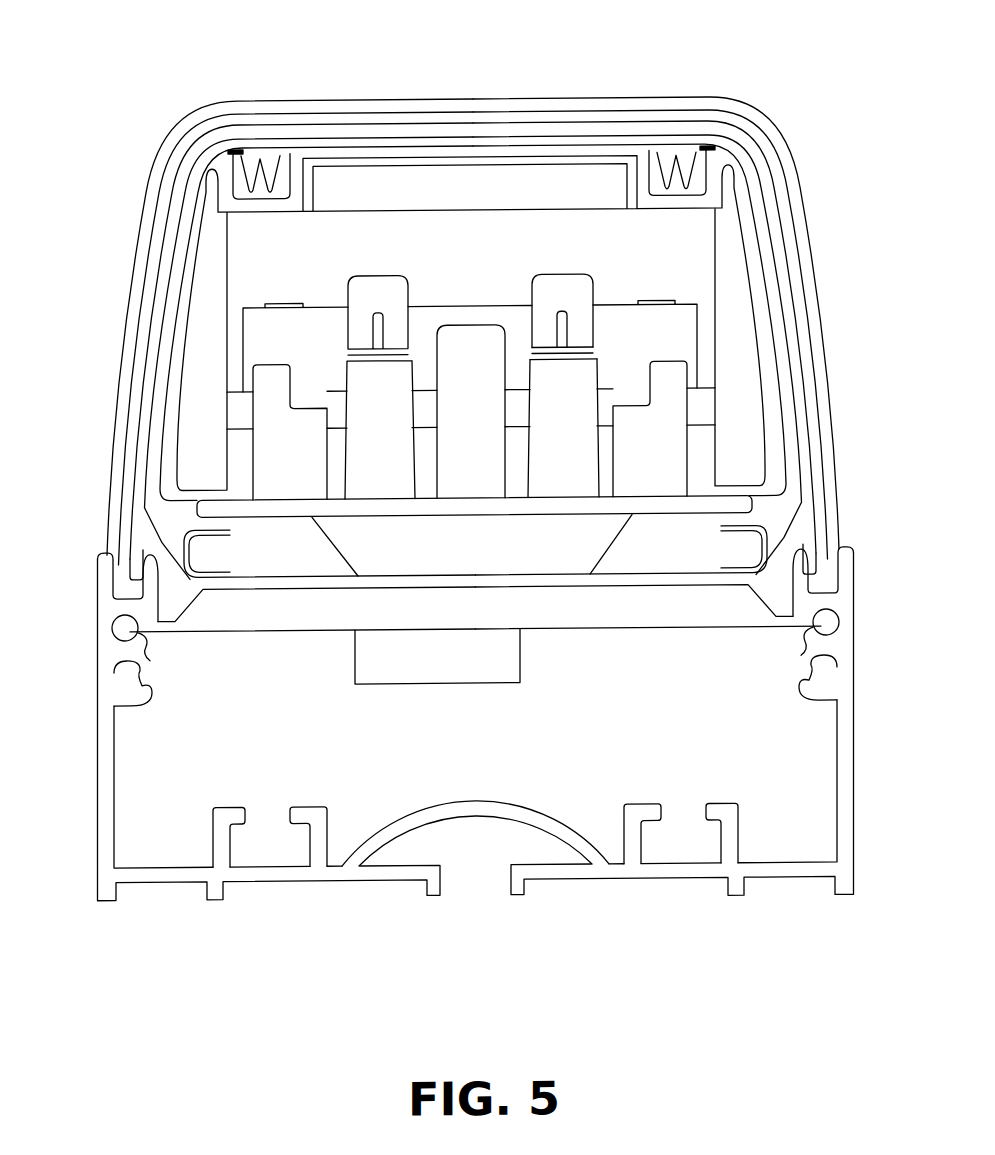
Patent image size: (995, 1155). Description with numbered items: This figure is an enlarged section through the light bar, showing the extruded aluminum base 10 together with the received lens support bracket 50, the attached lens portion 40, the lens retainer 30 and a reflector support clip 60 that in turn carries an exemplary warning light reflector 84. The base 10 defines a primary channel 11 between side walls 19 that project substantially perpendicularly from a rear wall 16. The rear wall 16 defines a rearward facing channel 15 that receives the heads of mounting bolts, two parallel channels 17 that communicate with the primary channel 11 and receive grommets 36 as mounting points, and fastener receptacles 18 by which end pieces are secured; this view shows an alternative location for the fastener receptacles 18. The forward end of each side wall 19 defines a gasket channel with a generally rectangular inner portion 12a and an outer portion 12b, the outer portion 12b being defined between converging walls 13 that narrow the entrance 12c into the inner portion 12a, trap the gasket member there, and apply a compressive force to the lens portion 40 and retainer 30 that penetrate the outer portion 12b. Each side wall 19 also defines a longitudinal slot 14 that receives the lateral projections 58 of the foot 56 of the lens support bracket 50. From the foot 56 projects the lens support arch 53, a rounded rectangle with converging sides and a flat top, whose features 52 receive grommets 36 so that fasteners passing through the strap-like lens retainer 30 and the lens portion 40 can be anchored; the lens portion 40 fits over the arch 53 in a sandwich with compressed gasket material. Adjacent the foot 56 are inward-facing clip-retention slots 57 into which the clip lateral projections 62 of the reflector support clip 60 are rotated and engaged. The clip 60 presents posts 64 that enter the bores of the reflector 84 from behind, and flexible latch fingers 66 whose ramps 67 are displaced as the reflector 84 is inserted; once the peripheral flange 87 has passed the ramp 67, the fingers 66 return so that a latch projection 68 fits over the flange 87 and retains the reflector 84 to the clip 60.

The base 10 is at (620, 886).
The primary channel 11 is at (418, 766).
The gasket channel inner portion 12a is at (816, 605).
The gasket channel outer portion 12b is at (122, 565).
The longitudinal opening 12c is at (821, 577).
The converging walls 13 is at (120, 597).
The longitudinal slot 14 is at (140, 633).
The rearward facing channel 15 is at (462, 857).
The rear wall 16 is at (329, 883).
The parallel channels 17 is at (680, 837).
The fastener receptacles 18 is at (130, 673).
The side walls 19 is at (107, 777).
The lens retainer 30 is at (406, 98).
The grommets 36 is at (690, 150).
The lens portion 40 is at (597, 130).
The lens support bracket 50 is at (303, 634).
The grommet-receiving features 52 is at (653, 192).
The lens support arch 53 is at (355, 190).
The foot 56 is at (540, 582).
The clip-retention slots 57 is at (227, 520).
The lateral projections 58 is at (805, 624).
The reflector support clip 60 is at (638, 492).
The clip lateral projections 62 is at (715, 505).
The posts 64 is at (273, 387).
The latch fingers 66 is at (360, 294).
The ramps 67 is at (562, 322).
The latch projection 68 is at (553, 357).
The warning light reflector 84 is at (507, 305).
The flange 87 is at (232, 335).